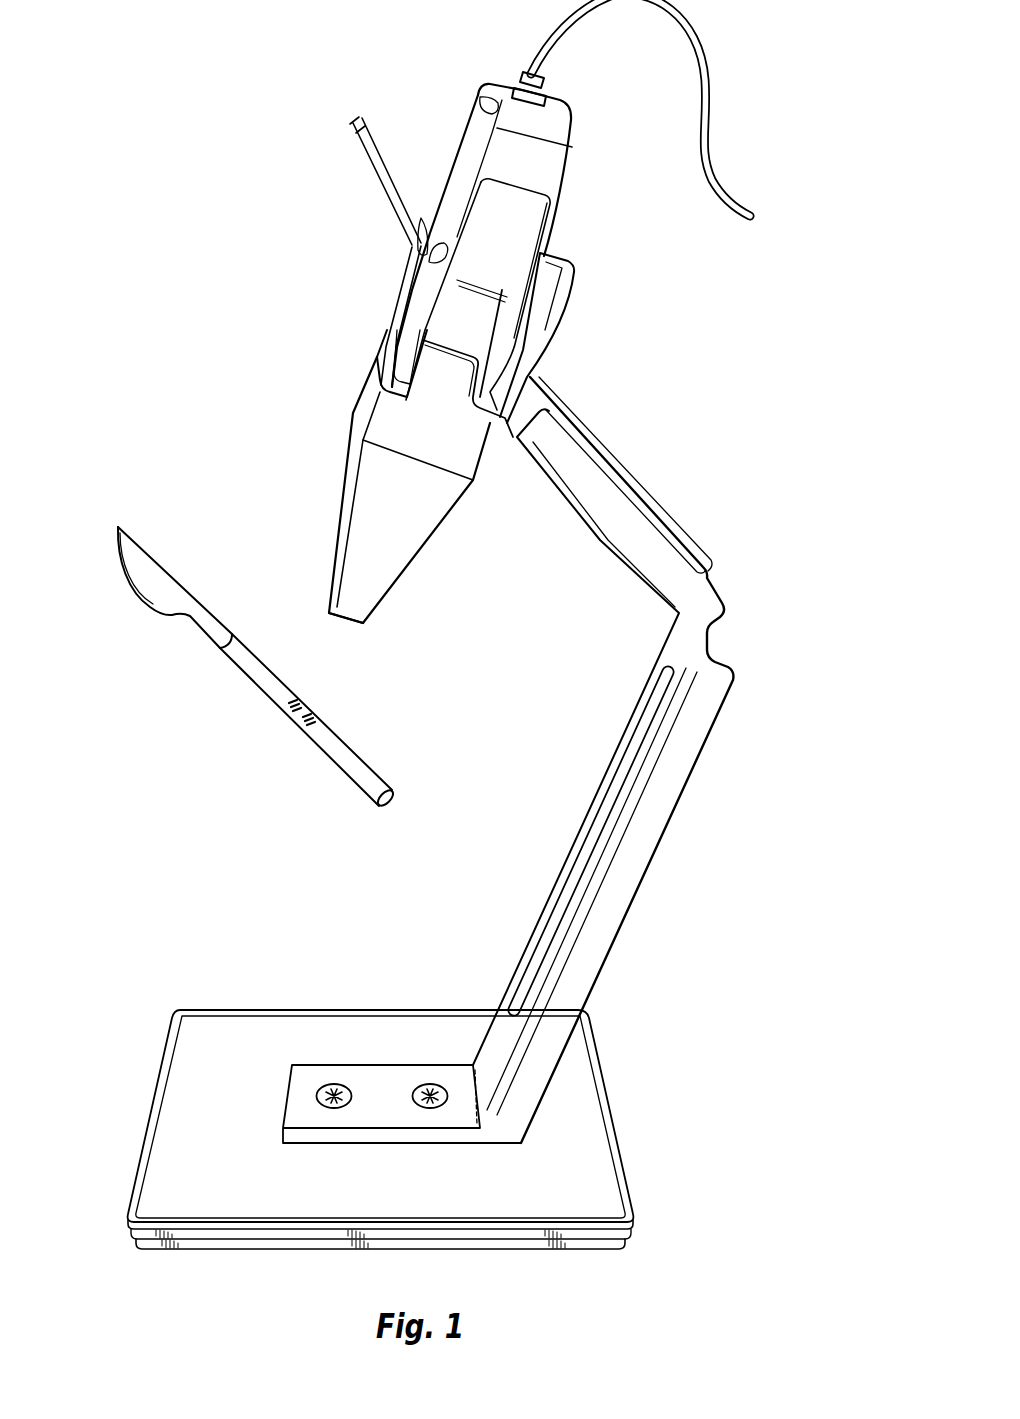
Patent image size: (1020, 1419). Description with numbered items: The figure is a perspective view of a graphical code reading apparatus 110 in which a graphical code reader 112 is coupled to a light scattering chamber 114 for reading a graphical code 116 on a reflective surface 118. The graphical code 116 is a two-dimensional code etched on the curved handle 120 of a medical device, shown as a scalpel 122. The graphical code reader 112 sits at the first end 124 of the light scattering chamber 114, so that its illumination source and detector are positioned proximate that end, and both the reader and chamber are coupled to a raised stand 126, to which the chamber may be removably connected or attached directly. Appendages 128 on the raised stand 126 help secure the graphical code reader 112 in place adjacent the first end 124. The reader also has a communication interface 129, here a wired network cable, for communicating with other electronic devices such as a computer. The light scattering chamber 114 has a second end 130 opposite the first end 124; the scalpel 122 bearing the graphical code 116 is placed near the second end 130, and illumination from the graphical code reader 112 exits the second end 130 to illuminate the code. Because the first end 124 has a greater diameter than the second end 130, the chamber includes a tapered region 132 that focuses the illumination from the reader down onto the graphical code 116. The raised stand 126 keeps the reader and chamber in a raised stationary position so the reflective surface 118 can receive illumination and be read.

The graphical code reading apparatus 110 is at (211, 219).
The graphical code reader 112 is at (461, 247).
The light scattering chamber 114 is at (375, 471).
The graphical code 116 is at (298, 722).
The reflective surface 118 is at (345, 726).
The curved handle 120 is at (348, 766).
The scalpel 122 is at (273, 672).
The first end 124 is at (365, 390).
The raised stand 126 is at (668, 795).
The appendages 128 is at (383, 182).
The communication interface 129 is at (705, 105).
The second end 130 is at (358, 610).
The tapered region 132 is at (425, 520).